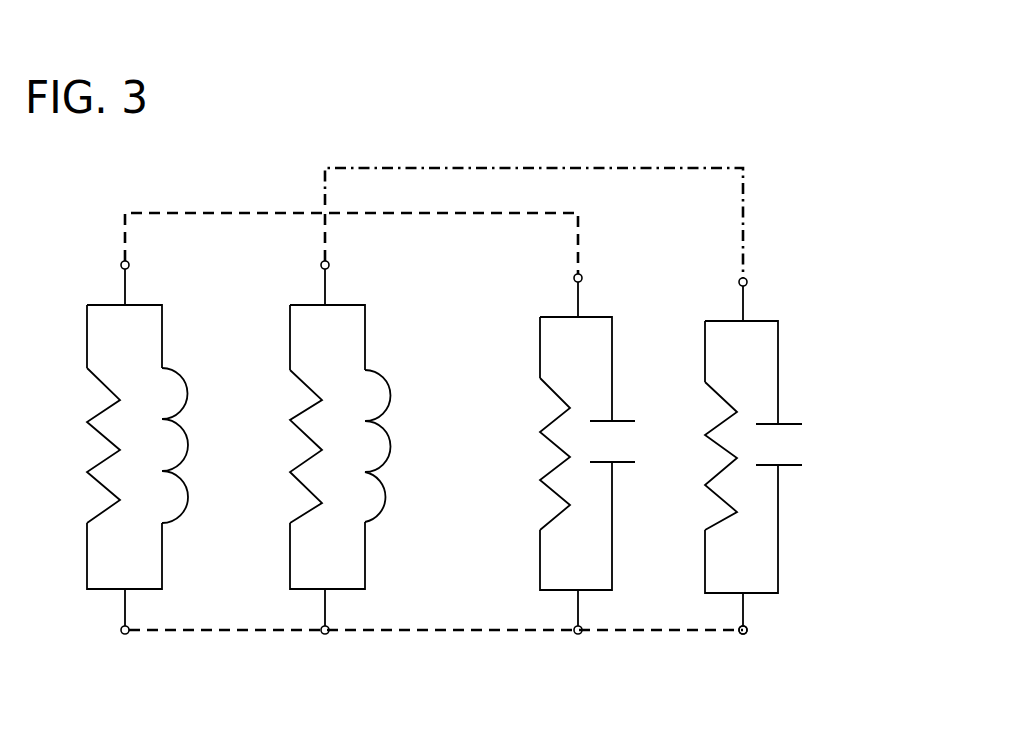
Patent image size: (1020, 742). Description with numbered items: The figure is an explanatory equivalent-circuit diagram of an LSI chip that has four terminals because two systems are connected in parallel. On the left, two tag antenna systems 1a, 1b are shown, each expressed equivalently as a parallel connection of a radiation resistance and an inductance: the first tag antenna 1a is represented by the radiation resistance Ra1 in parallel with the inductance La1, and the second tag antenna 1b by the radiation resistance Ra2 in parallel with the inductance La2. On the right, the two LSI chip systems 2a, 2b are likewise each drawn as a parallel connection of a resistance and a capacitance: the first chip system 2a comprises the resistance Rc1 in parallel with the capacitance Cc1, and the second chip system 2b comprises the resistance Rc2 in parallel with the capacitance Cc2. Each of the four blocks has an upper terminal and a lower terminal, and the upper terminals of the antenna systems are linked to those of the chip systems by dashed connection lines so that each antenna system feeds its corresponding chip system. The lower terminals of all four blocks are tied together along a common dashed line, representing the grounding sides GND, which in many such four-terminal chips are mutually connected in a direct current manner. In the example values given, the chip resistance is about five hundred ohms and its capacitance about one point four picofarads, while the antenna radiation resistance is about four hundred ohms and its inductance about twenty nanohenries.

The tag antenna 1a is at (180, 647).
The tag antenna 1b is at (383, 647).
The LSI chip 2a is at (632, 650).
The LSI chip 2b is at (803, 650).
The radiation resistance Ra1 is at (74, 445).
The inductance La1 is at (200, 445).
The radiation resistance Ra2 is at (274, 446).
The inductance La2 is at (405, 446).
The resistance Rc1 is at (528, 454).
The capacitance Cc1 is at (626, 420).
The resistance Rc2 is at (698, 456).
The capacitance Cc2 is at (801, 419).
The grounding side GND is at (745, 629).